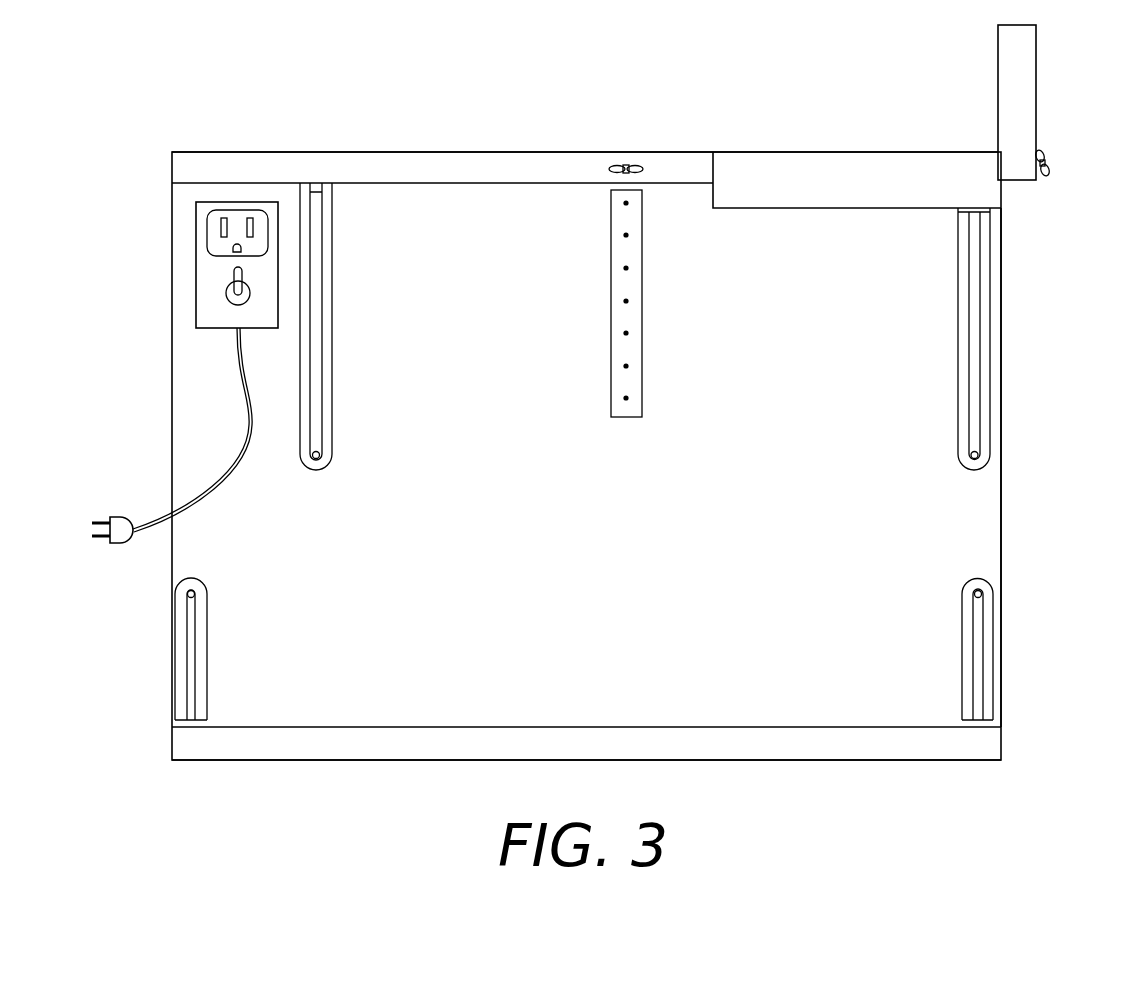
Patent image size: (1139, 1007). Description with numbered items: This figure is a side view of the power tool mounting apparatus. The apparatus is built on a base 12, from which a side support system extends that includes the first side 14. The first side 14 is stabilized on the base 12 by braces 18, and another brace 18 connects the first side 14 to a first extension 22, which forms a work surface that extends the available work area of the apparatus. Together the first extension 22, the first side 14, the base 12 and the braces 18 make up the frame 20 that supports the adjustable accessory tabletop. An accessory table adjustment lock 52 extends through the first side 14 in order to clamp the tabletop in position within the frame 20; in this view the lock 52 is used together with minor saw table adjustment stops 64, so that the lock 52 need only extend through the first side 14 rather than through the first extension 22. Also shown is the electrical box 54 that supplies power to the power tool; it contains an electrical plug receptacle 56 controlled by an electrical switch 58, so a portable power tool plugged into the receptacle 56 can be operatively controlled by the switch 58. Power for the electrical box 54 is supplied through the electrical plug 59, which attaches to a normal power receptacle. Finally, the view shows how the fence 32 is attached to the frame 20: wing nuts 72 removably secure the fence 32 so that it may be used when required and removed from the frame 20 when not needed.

The base 12 is at (1002, 742).
The first side 14 is at (983, 490).
The braces 18 is at (300, 375).
The frame 20 is at (1002, 545).
The first extension 22 is at (532, 152).
The fence 32 is at (1036, 80).
The accessory table adjustment lock 52 is at (628, 161).
The electrical box 54 is at (196, 320).
The electrical plug receptacle 56 is at (206, 232).
The electrical switch 58 is at (226, 292).
The electrical plug 59 is at (113, 517).
The saw table adjustment stops 64 is at (642, 257).
The wing nuts 72 is at (1048, 160).